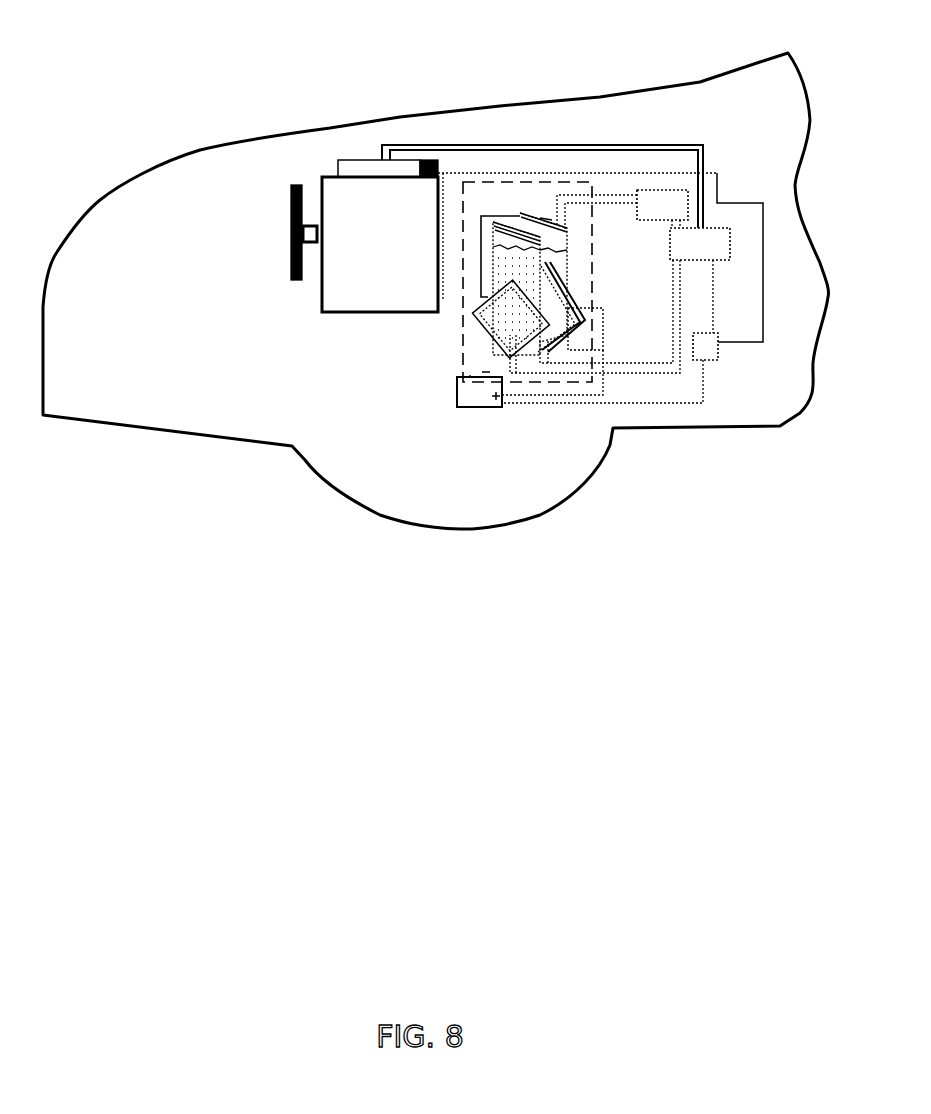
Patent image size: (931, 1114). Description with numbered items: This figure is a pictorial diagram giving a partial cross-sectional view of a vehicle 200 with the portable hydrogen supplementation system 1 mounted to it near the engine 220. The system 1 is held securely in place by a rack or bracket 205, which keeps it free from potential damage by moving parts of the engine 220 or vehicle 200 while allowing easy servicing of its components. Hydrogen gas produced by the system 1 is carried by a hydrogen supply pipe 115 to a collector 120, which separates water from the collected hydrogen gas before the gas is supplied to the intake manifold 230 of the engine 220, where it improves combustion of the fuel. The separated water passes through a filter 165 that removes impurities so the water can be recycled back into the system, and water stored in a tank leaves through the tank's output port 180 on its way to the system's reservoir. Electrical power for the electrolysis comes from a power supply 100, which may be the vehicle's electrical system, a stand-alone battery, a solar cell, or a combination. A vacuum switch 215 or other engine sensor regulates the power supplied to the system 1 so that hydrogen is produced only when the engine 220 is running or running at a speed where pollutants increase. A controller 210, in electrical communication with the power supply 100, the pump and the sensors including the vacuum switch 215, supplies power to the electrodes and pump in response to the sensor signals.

The portable hydrogen supplementation system 1 is at (462, 330).
The power supply 100 is at (468, 390).
The hydrogen supply pipe 115 is at (632, 372).
The collector 120 is at (727, 228).
The filter 165 is at (652, 197).
The output port 180 is at (573, 193).
The vehicle 200 is at (727, 78).
The rack or bracket 205 is at (505, 213).
The controller 210 is at (718, 358).
The vacuum switch 215 is at (425, 162).
The engine 220 is at (318, 312).
The intake manifold 230 is at (352, 158).